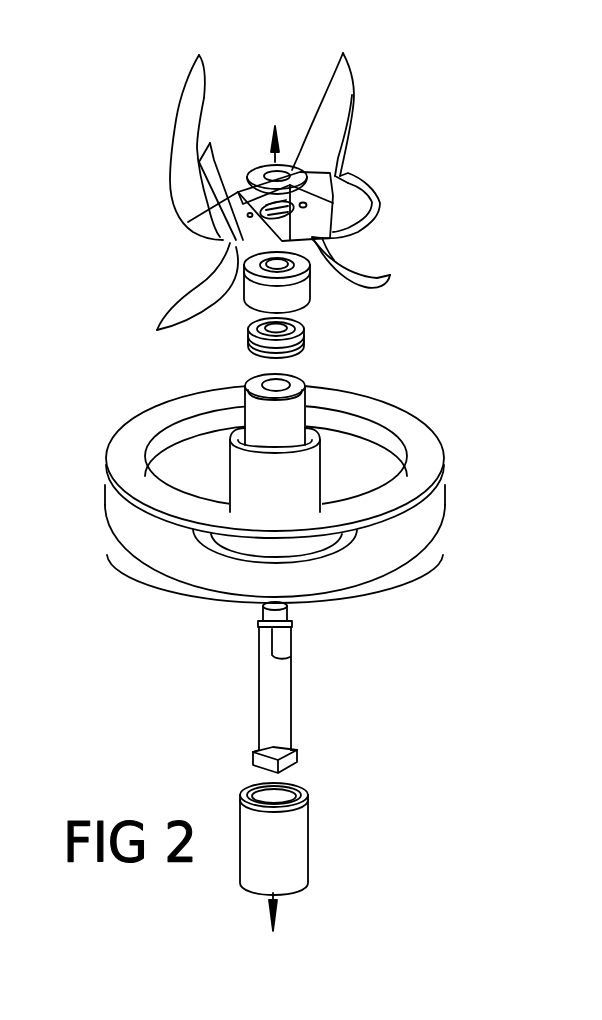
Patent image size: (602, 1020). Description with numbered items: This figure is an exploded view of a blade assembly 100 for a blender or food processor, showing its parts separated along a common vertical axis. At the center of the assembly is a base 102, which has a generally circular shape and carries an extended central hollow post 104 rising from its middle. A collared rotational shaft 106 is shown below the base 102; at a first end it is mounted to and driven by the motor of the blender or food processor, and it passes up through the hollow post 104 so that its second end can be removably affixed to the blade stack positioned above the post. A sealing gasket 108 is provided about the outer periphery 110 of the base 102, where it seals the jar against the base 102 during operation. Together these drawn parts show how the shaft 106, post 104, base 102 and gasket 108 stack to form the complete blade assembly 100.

The blade assembly 100 is at (502, 78).
The base 102 is at (318, 580).
The extended central hollow post 104 is at (300, 507).
The collared rotational shaft 106 is at (268, 688).
The sealing gasket 108 is at (110, 483).
The outer periphery 110 is at (133, 573).